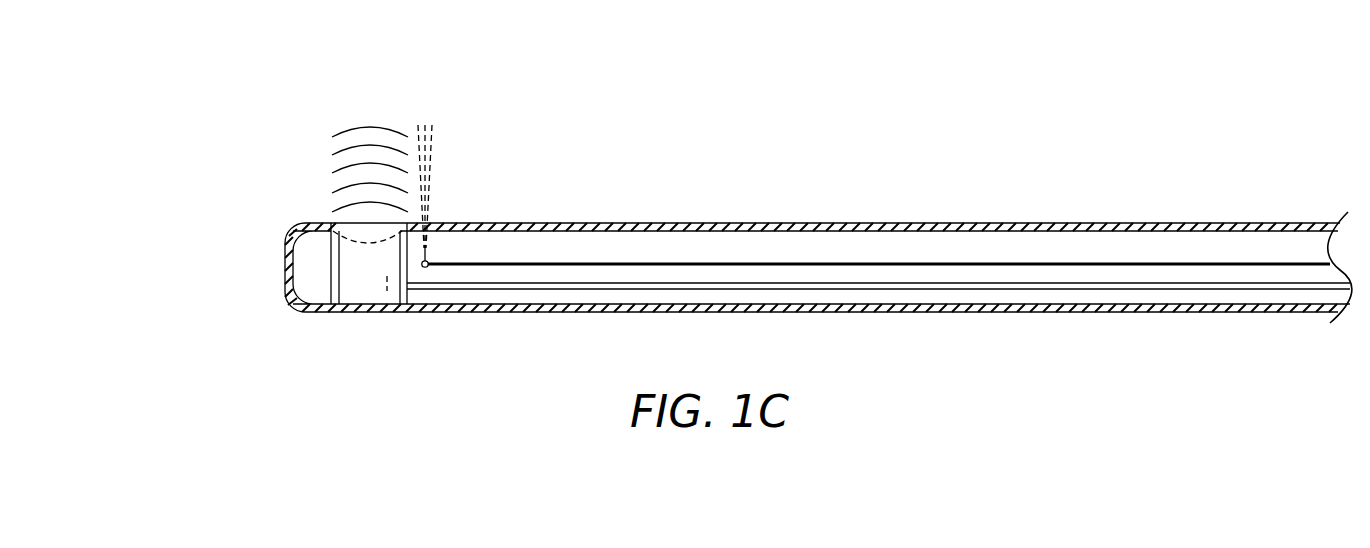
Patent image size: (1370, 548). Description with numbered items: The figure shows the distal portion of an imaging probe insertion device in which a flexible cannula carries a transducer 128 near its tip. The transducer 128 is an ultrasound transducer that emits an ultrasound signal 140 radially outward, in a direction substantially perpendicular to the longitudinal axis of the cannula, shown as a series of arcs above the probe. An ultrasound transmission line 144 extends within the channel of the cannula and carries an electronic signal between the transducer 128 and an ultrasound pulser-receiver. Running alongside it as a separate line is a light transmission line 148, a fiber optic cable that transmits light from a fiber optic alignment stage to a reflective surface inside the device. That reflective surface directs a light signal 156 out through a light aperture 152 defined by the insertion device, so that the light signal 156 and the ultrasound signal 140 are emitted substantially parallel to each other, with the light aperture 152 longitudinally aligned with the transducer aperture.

The transducer 128 is at (363, 282).
The ultrasound signal 140 is at (338, 170).
The ultrasound transmission line 144 is at (598, 285).
The light transmission line 148 is at (903, 263).
The light aperture 152 is at (430, 223).
The light signal 156 is at (433, 138).